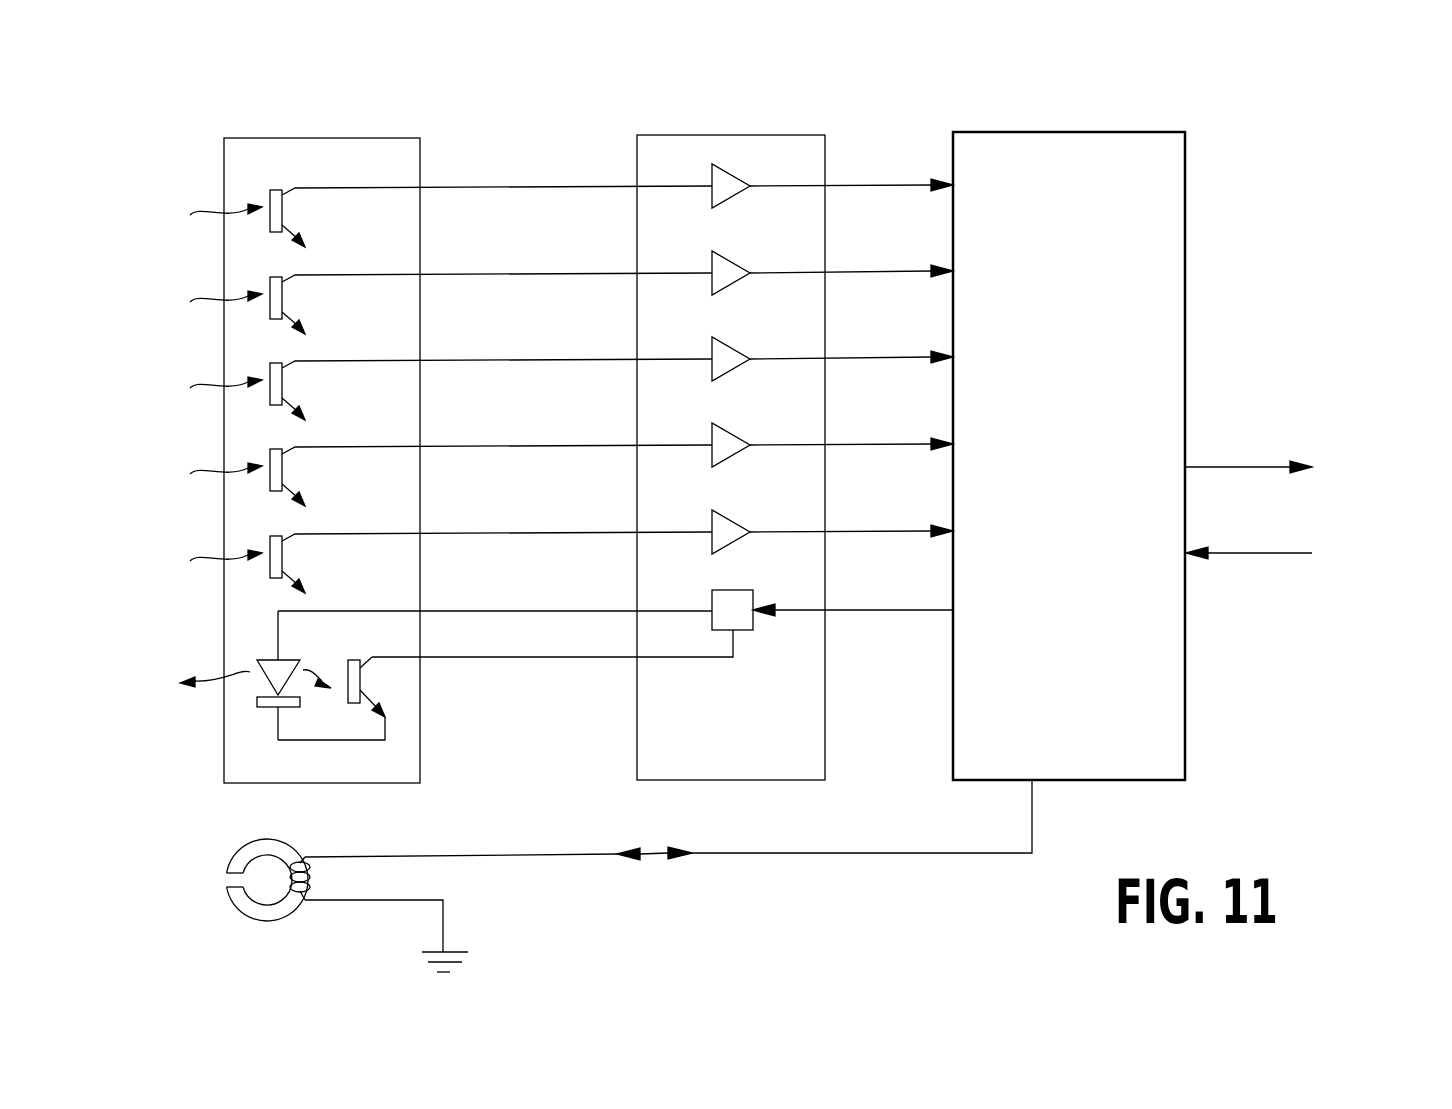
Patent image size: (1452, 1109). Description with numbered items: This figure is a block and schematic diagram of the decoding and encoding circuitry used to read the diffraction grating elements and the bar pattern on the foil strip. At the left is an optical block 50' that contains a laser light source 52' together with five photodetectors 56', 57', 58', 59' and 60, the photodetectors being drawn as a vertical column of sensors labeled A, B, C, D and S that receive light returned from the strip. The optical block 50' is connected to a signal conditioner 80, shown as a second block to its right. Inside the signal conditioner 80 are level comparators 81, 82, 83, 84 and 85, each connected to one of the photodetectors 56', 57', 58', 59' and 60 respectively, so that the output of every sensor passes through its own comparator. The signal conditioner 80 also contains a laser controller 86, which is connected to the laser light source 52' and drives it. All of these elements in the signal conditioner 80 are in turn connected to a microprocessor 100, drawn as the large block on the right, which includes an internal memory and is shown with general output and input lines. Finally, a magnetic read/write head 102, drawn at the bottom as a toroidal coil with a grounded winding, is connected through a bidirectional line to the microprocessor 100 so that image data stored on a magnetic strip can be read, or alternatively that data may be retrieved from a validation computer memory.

The optical block 50' is at (322, 438).
The laser light source 52' is at (270, 684).
The photodetector 56' is at (417, 206).
The photodetector 57' is at (417, 293).
The photodetector 58' is at (417, 379).
The photodetector 59' is at (417, 465).
The photodetector 60 is at (273, 543).
The signal conditioner 80 is at (785, 142).
The level comparator 81 is at (712, 180).
The level comparator 82 is at (712, 267).
The level comparator 83 is at (712, 353).
The level comparator 84 is at (712, 439).
The level comparator 85 is at (712, 526).
The laser controller 86 is at (718, 600).
The microprocessor 100 is at (1167, 377).
The magnetic read/write head 102 is at (248, 910).